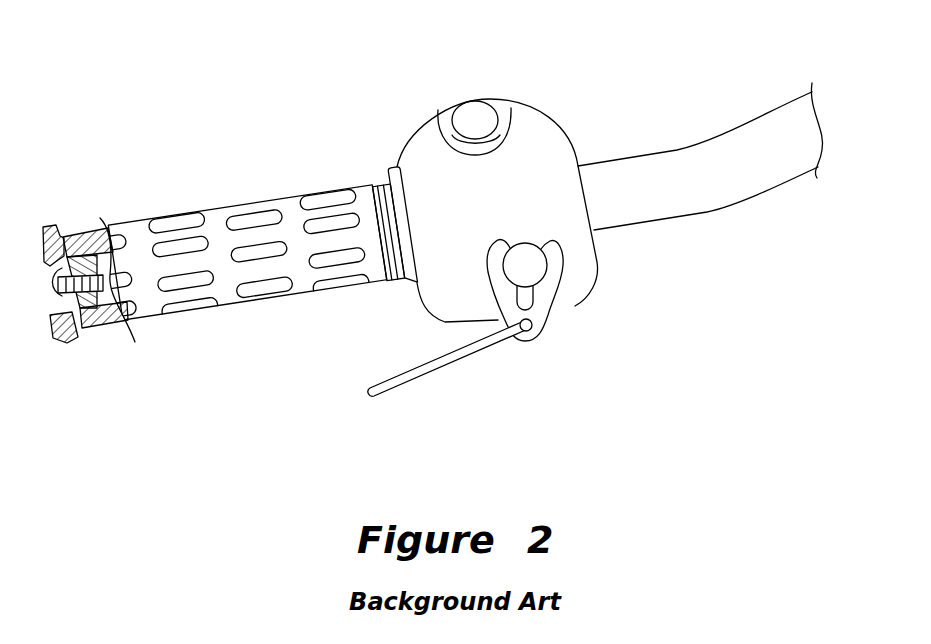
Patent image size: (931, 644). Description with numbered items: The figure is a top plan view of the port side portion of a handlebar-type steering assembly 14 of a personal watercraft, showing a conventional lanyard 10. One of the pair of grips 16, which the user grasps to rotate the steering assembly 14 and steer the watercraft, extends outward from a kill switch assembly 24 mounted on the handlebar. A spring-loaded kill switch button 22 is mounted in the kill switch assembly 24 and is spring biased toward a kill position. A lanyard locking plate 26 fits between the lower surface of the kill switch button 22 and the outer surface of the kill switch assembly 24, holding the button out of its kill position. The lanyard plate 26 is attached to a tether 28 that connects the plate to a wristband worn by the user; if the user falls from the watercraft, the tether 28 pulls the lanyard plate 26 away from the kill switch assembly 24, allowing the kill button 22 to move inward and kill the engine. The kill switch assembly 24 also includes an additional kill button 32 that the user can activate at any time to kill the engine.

The lanyard 10 is at (433, 255).
The steering assembly 14 is at (703, 170).
The grip 16 is at (227, 283).
The kill switch button 22 is at (535, 267).
The kill switch assembly 24 is at (417, 140).
The lanyard locking plate 26 is at (550, 293).
The tether 28 is at (470, 358).
The additional kill button 32 is at (472, 113).